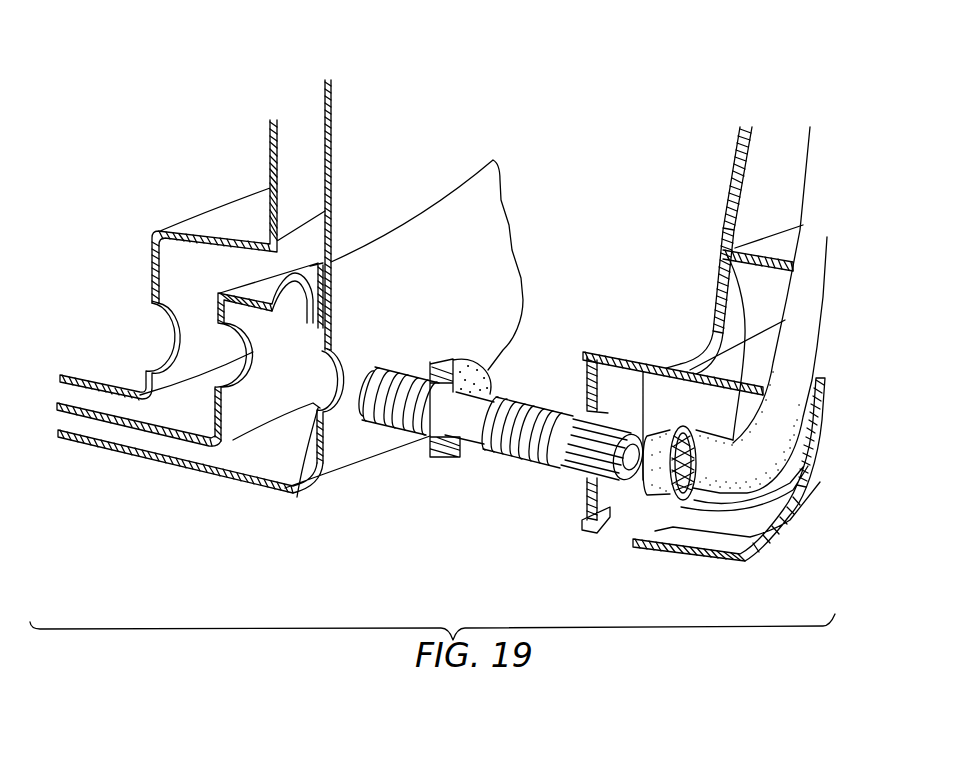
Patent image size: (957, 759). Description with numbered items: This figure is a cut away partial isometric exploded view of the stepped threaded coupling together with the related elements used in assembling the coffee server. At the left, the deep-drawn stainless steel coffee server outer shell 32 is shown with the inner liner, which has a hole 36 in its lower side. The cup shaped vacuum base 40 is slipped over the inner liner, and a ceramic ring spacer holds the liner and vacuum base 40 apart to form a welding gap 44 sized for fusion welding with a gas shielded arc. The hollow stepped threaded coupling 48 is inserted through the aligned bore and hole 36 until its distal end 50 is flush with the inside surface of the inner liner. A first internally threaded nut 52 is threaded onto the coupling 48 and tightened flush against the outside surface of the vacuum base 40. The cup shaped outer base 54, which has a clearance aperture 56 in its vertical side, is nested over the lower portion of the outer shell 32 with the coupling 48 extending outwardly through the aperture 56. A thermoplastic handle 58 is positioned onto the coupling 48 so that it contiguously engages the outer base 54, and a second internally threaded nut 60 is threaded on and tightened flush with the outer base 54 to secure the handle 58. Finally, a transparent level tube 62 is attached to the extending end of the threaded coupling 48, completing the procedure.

The coffee server outer shell 32 is at (337, 103).
The welding gap 44 is at (338, 335).
The hole 36 is at (173, 343).
The vacuum base 40 is at (128, 428).
The outer base 54 is at (205, 468).
The clearance aperture 56 is at (297, 495).
The distal end 50 is at (362, 405).
The first internally threaded nut 52 is at (470, 363).
The hollow stepped threaded coupling 48 is at (502, 398).
The second internally threaded nut 60 is at (641, 492).
The handle 58 is at (753, 556).
The transparent level tube 62 is at (723, 253).